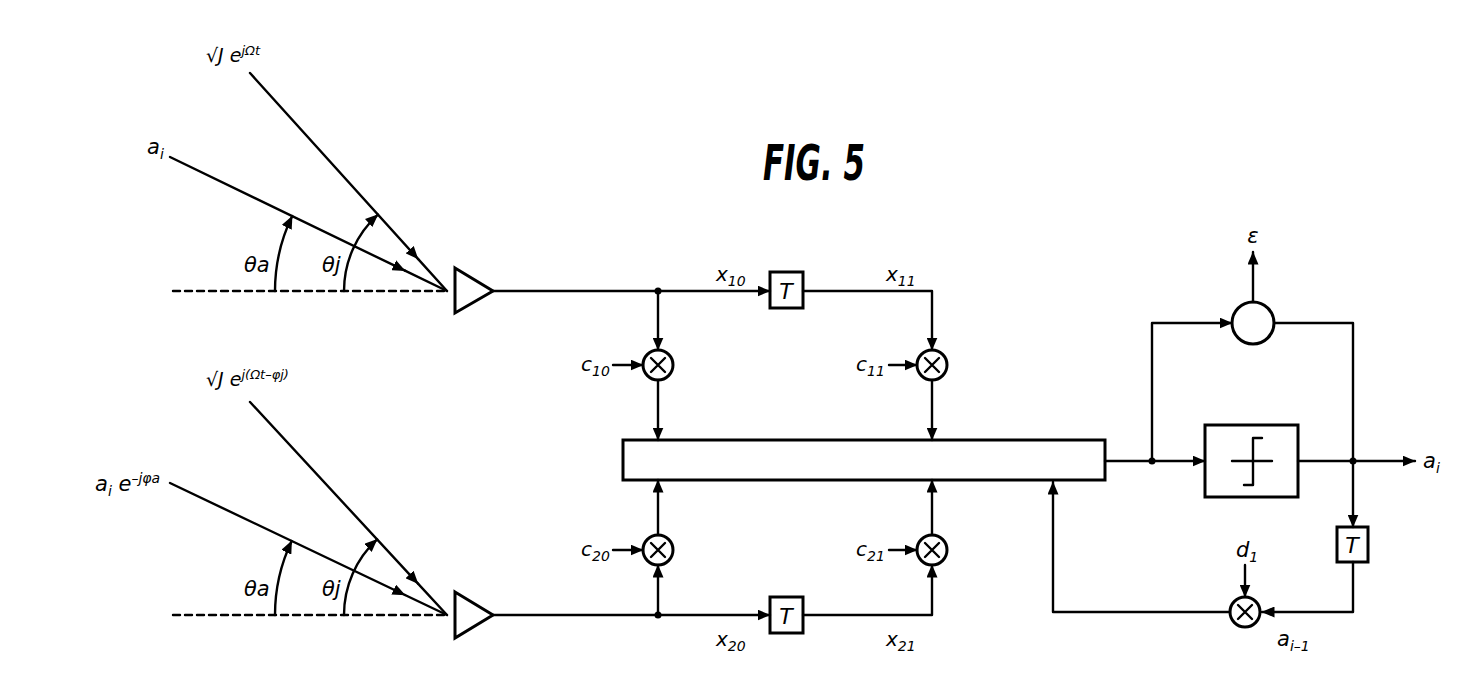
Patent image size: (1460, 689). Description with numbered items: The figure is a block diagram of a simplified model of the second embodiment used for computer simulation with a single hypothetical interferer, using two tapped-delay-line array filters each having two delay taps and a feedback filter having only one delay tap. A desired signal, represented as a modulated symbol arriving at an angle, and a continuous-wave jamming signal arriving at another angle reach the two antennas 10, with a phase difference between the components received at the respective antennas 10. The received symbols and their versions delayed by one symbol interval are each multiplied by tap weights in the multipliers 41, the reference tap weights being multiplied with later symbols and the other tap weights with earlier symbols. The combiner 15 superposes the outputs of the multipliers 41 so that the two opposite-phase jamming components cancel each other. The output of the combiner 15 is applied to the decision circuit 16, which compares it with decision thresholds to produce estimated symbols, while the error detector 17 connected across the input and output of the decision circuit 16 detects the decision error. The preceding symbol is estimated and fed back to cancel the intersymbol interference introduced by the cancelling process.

The antenna 10 is at (472, 279).
The multiplier 41 is at (674, 359).
The combiner 15 is at (1027, 439).
The decision circuit 16 is at (1252, 425).
The error detector 17 is at (1270, 307).